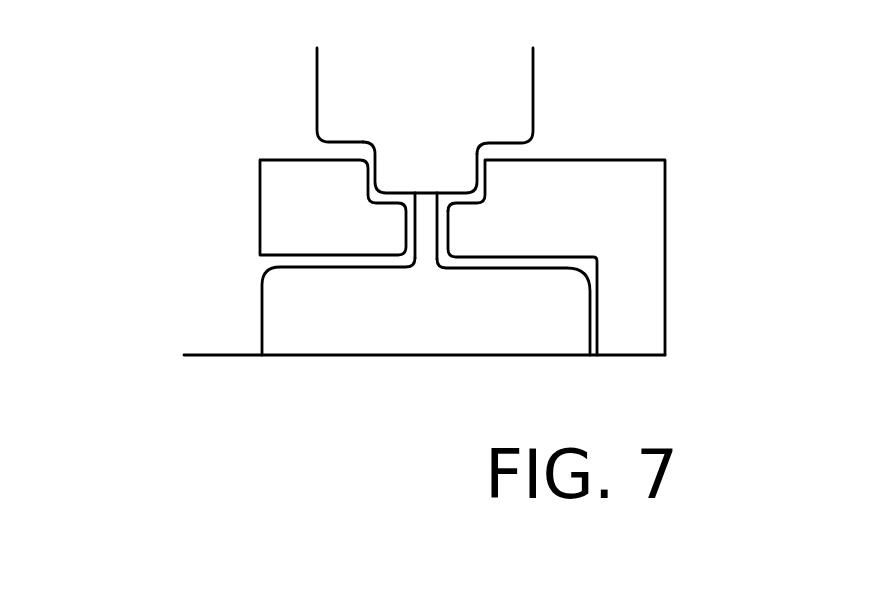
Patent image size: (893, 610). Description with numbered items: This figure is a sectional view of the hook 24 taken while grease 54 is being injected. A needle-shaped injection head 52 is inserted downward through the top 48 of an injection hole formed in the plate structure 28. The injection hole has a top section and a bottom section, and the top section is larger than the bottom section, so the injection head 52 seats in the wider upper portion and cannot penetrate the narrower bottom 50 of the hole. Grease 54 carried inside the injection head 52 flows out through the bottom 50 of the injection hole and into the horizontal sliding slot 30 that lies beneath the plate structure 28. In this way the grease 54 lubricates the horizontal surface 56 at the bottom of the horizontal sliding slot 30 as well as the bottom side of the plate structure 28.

The hook 24 is at (628, 253).
The plate structure 28 is at (277, 180).
The horizontal sliding slot 30 is at (573, 335).
The top of the injection hole 48 is at (373, 177).
The bottom of the injection hole 50 is at (410, 230).
The injection head 52 is at (483, 92).
The grease 54 is at (290, 332).
The horizontal surface 56 is at (410, 357).